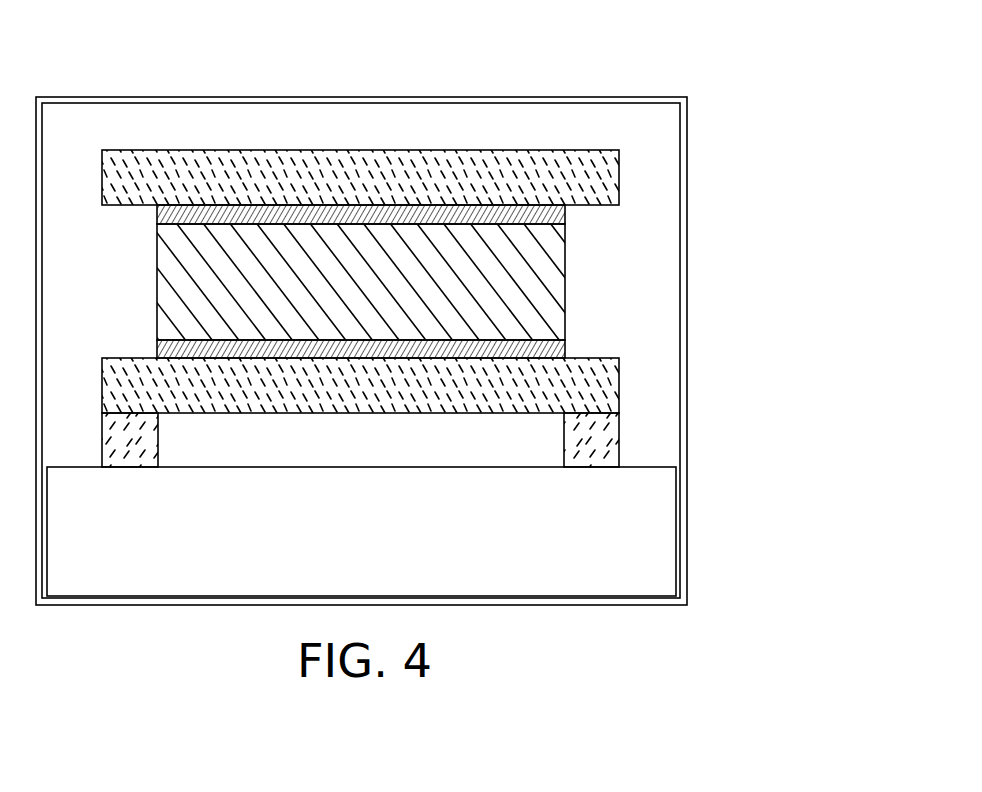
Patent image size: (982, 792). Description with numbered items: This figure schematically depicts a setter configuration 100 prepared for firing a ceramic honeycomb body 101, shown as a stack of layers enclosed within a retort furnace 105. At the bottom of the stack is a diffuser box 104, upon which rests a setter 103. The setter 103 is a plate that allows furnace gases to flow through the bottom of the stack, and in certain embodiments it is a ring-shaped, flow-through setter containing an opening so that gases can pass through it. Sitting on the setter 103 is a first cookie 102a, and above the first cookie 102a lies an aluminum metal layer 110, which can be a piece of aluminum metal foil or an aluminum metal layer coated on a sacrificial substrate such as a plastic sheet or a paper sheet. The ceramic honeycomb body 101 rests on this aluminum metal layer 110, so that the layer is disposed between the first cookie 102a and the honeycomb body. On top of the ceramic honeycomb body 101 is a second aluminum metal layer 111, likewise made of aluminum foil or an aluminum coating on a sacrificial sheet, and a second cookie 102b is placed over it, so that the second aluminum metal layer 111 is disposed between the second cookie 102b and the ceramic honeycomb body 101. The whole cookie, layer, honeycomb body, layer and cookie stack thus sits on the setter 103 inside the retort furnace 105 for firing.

The setter configuration 100 is at (257, 118).
The retort furnace 105 is at (570, 95).
The diffuser box 104 is at (660, 523).
The setter 103 is at (619, 437).
The first cookie 102a is at (619, 387).
The aluminum metal layer 110 is at (565, 347).
The ceramic honeycomb body 101 is at (565, 268).
The second aluminum metal layer 111 is at (567, 218).
The second cookie 102b is at (137, 205).